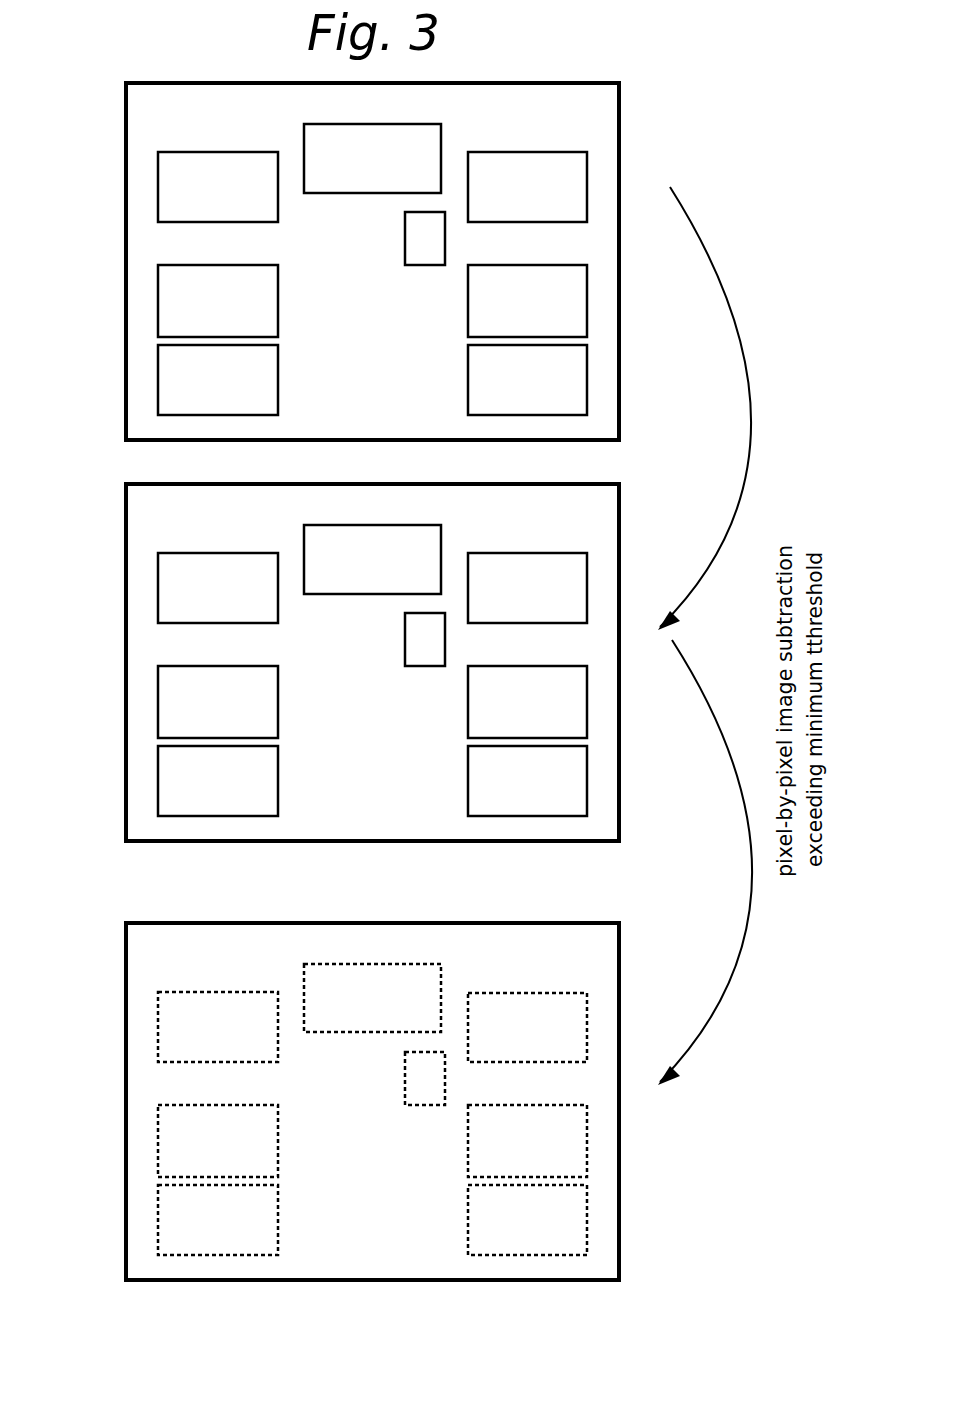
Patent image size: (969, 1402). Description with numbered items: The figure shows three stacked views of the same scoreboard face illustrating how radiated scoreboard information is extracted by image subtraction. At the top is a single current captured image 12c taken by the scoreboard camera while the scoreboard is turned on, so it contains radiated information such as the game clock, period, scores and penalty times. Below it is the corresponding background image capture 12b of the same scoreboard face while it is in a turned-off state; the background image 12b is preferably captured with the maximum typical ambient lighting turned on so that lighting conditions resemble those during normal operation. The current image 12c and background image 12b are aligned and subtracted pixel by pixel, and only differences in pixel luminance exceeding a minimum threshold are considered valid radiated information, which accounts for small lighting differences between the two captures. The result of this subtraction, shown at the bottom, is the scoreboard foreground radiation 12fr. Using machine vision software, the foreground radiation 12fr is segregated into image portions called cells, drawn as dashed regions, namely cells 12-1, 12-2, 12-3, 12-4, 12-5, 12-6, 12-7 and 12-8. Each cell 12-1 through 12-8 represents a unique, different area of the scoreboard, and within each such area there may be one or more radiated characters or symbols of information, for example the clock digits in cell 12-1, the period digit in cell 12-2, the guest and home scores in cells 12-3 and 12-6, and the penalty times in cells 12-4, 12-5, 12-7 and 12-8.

The current captured image 12c is at (112, 164).
The background image capture 12b is at (112, 565).
The scoreboard foreground radiation 12fr is at (112, 1004).
The cell 12-1 is at (303, 964).
The cell 12-2 is at (422, 1105).
The cell 12-3 is at (210, 993).
The cell 12-4 is at (157, 1163).
The cell 12-5 is at (157, 1213).
The cell 12-6 is at (521, 996).
The cell 12-7 is at (588, 1159).
The cell 12-8 is at (588, 1222).